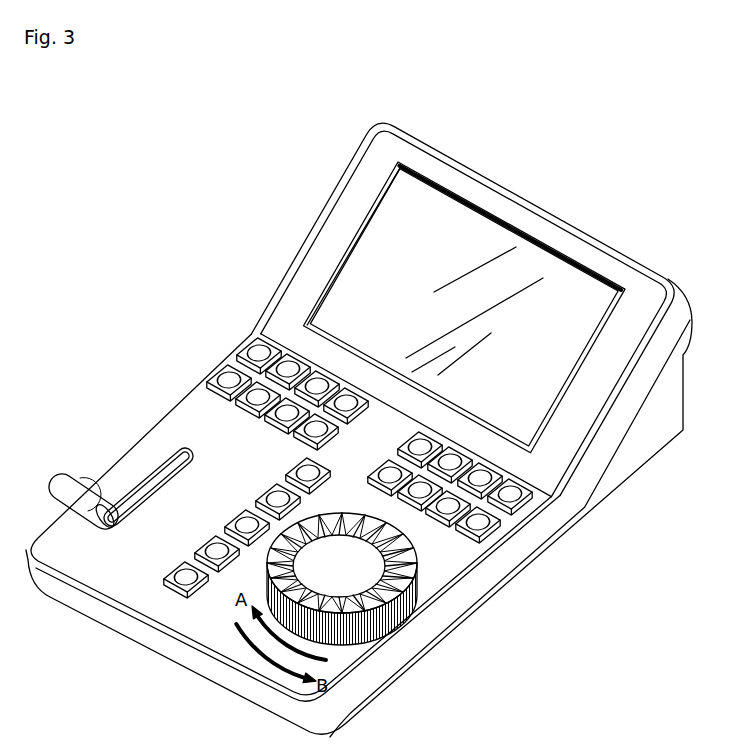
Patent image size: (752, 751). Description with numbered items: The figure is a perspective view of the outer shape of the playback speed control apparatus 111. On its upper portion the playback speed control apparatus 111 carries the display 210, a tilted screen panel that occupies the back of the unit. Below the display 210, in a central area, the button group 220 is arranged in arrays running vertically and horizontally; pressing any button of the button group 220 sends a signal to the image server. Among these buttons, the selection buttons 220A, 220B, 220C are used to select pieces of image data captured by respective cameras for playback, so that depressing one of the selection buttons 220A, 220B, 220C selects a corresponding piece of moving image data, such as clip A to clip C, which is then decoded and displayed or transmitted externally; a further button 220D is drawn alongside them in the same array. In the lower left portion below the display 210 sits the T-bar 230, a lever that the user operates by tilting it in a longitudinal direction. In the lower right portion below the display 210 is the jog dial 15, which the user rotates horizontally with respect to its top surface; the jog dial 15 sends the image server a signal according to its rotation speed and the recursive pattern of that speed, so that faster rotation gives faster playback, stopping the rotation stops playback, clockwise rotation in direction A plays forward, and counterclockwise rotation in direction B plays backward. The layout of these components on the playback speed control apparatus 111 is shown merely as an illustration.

The playback speed control apparatus 111 is at (510, 145).
The display 210 is at (562, 283).
The button group 220 is at (250, 523).
The selection button 220A is at (258, 352).
The selection button 220B is at (289, 368).
The selection button 220C is at (317, 385).
The operation button 220D is at (236, 383).
The T-bar 230 is at (60, 478).
The jog dial 15 is at (372, 605).